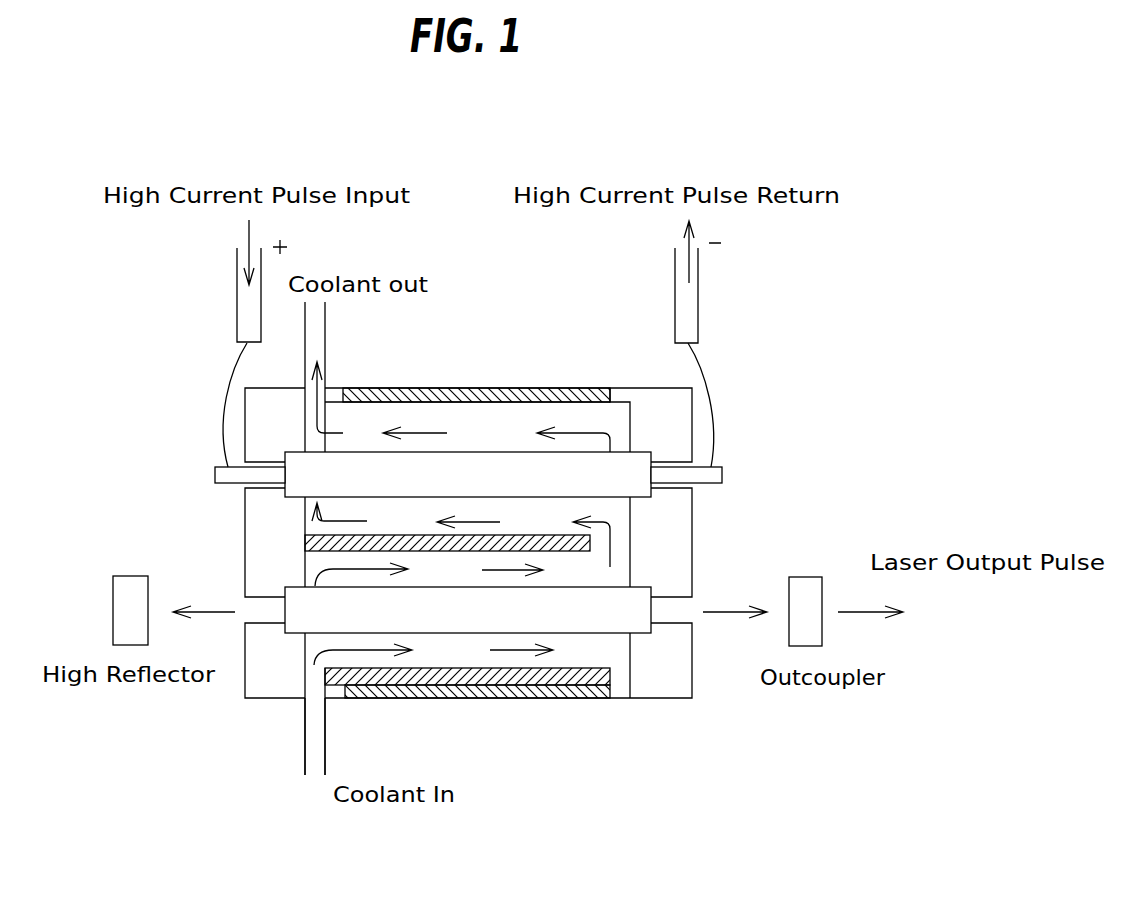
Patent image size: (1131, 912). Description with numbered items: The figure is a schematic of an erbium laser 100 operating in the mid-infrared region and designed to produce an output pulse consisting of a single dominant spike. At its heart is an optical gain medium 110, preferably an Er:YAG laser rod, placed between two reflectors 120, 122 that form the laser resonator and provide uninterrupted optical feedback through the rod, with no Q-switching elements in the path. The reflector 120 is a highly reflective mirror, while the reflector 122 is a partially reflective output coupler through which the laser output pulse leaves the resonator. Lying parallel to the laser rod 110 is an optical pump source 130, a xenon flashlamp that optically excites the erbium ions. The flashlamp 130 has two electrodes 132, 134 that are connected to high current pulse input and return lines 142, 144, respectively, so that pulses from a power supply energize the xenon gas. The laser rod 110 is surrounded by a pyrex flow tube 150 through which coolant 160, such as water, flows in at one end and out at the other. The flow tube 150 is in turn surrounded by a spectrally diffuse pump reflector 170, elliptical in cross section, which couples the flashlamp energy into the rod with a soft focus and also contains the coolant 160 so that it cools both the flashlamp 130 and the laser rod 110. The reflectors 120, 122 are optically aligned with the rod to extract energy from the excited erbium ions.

The erbium laser 100 is at (663, 783).
The optical gain medium 110 is at (573, 624).
The reflector 120 is at (128, 575).
The reflector 122 is at (805, 577).
The optical pump source 130 is at (560, 489).
The electrode 132 is at (215, 475).
The electrode 134 is at (722, 475).
The high current pulse input line 142 is at (240, 358).
The high current pulse return line 144 is at (700, 357).
The flow tube 150 is at (318, 541).
The coolant 160 is at (320, 780).
The pump reflector 170 is at (529, 388).